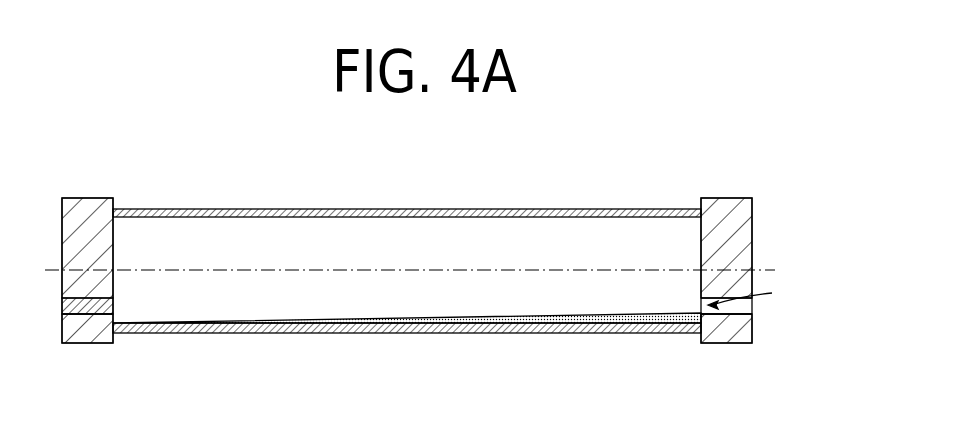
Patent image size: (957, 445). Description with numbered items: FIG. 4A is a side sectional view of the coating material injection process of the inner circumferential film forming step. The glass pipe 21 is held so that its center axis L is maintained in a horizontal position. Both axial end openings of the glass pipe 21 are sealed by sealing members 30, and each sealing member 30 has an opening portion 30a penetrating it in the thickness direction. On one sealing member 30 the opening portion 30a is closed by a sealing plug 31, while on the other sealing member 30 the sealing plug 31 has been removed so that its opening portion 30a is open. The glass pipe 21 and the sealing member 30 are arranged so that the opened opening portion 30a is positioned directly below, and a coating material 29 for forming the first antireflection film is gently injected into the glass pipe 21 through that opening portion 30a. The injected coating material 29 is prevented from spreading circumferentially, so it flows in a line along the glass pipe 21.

The glass pipe 21 is at (414, 209).
The coating material 29 is at (500, 335).
The sealing member 30 is at (93, 205).
The opening portion 30a is at (84, 318).
The sealing plug 31 is at (66, 308).
The center axis L is at (493, 270).